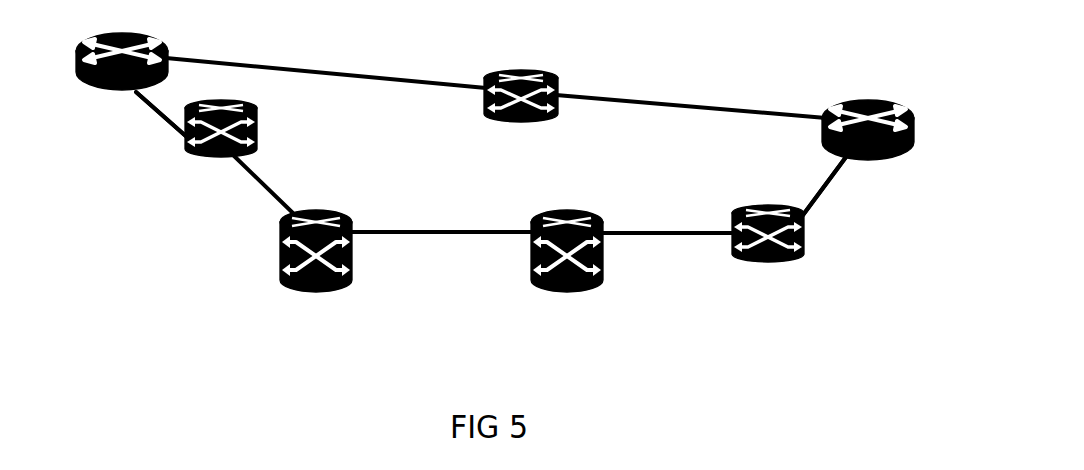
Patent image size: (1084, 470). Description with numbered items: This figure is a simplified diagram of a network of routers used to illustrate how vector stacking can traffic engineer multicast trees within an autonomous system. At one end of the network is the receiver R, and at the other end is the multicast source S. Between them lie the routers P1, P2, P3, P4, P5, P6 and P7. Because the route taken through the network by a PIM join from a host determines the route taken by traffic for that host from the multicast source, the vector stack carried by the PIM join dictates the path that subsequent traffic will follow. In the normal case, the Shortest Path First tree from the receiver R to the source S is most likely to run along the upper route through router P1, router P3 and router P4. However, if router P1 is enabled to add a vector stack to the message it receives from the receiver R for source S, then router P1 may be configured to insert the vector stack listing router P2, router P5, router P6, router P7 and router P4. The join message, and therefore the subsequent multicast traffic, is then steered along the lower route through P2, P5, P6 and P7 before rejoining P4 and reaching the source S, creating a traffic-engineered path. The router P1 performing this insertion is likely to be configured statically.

The receiver R is at (106, 59).
The source S is at (871, 102).
The router P1 is at (153, 118).
The router P2 is at (221, 149).
The router P3 is at (521, 117).
The router P4 is at (858, 186).
The router P5 is at (316, 272).
The router P6 is at (568, 272).
The router P7 is at (768, 256).